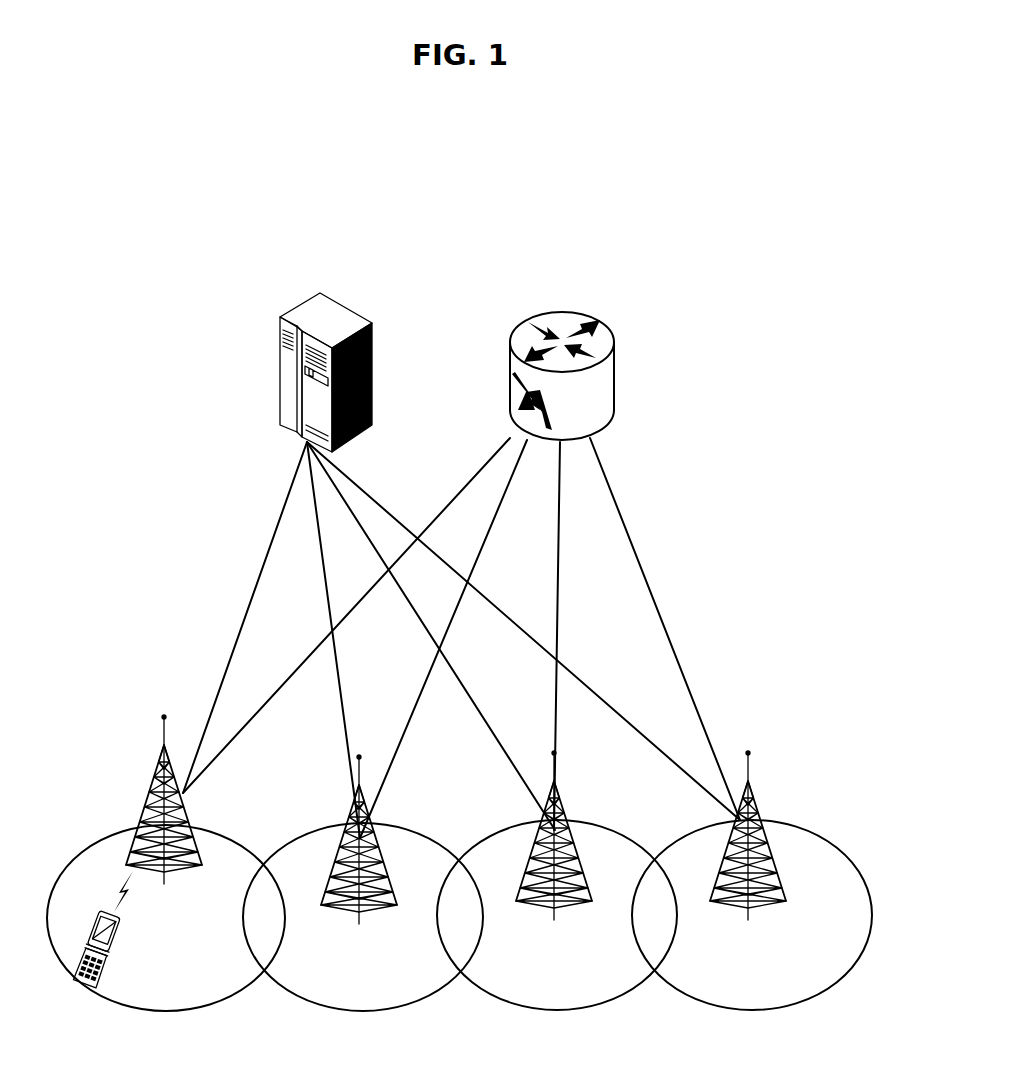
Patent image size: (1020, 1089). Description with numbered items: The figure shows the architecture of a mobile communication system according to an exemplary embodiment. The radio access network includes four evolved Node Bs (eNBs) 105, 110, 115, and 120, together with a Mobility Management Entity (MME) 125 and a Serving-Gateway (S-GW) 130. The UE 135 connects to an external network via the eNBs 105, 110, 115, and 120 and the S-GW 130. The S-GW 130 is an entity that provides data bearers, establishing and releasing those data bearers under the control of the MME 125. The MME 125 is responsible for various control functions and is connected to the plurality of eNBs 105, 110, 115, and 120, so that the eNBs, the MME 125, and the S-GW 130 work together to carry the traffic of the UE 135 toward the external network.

The evolved Node B 105 is at (150, 782).
The evolved Node B 110 is at (353, 800).
The evolved Node B 115 is at (567, 800).
The evolved Node B 120 is at (757, 802).
The Mobility Management Entity 125 is at (310, 315).
The Serving-Gateway 130 is at (558, 318).
The UE 135 is at (118, 942).